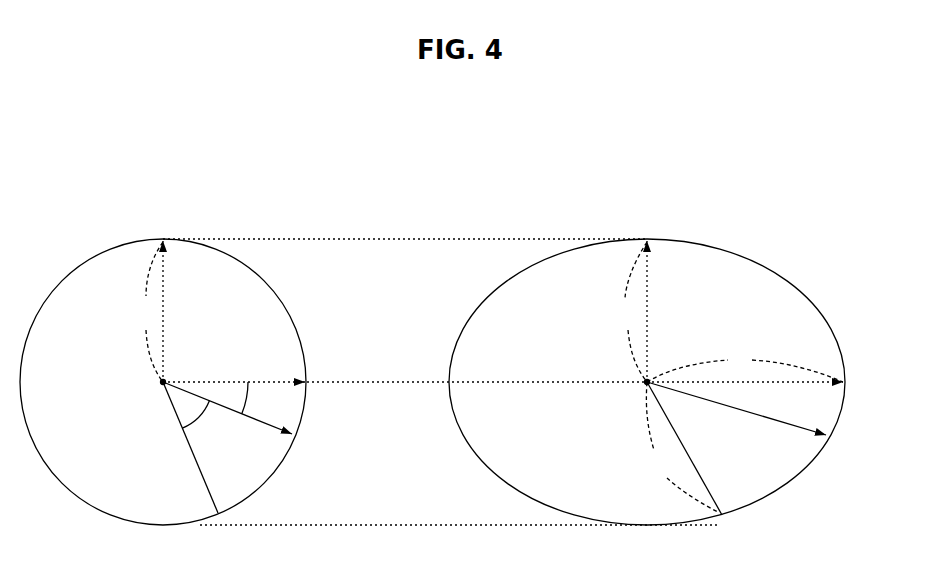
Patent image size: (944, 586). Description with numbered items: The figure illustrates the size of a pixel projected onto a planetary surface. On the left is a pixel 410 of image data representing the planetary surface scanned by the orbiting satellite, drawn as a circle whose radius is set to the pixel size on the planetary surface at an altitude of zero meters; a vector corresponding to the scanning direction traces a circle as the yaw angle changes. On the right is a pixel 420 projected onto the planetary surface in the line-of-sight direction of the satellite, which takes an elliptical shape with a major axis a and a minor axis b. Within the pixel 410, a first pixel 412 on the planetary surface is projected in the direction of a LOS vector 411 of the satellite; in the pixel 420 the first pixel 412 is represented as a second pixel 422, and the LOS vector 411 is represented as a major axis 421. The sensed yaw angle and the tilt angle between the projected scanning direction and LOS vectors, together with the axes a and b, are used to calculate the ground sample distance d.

The pixel 410 is at (135, 241).
The LOS vector 411 is at (237, 382).
The first pixel 412 is at (208, 481).
The pixel projected onto the planetary surface 420 is at (713, 244).
The major axis 421 is at (778, 385).
The second pixel 422 is at (686, 449).